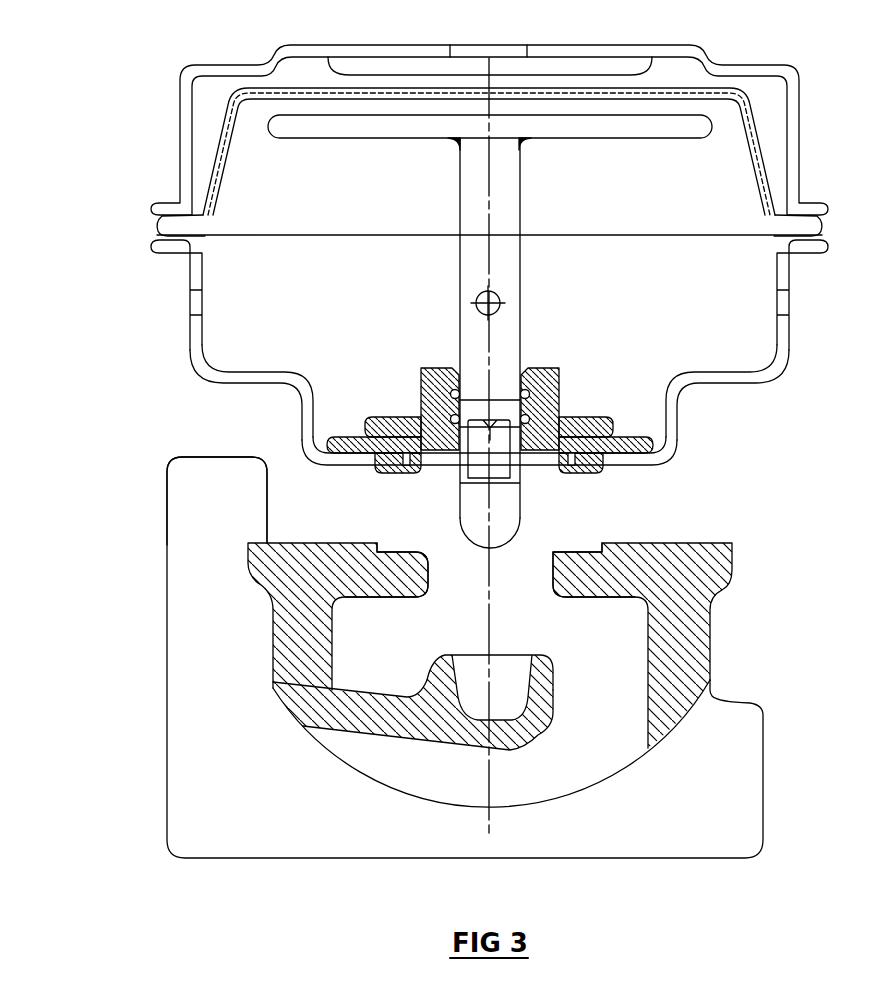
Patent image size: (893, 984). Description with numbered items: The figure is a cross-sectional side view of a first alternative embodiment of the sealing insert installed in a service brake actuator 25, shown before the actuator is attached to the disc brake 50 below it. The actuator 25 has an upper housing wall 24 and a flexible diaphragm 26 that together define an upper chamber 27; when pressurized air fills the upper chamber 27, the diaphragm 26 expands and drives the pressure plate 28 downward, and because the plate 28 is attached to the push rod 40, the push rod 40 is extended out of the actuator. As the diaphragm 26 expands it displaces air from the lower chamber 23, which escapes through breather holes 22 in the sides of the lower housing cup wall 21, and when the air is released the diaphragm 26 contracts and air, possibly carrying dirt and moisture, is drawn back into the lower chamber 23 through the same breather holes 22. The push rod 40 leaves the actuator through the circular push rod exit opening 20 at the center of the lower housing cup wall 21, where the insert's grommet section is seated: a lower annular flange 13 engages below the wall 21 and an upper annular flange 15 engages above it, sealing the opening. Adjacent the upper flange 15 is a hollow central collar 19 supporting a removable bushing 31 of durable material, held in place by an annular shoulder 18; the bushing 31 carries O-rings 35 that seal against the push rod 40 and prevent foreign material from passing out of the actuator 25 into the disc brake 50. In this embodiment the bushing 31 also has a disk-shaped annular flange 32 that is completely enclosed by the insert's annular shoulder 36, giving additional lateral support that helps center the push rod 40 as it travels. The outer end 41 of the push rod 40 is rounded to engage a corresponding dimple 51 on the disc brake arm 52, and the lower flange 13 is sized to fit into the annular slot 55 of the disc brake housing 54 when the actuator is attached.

The lower annular flange 13 is at (387, 468).
The upper annular flange 15 is at (635, 440).
The annular shoulder 18 is at (433, 372).
The hollow central collar 19 is at (555, 403).
The push rod exit opening 20 is at (537, 460).
The lower housing cup wall 21 is at (675, 443).
The breather holes 22 is at (196, 305).
The lower chamber 23 is at (250, 340).
The upper housing wall 24 is at (184, 93).
The service brake actuator 25 is at (115, 155).
The flexible diaphragm 26 is at (224, 160).
The upper chamber 27 is at (210, 88).
The pressure plate 28 is at (587, 138).
The removable bushing 31 is at (530, 393).
The disk-shaped annular flange 32 is at (397, 430).
The O-ring 35 is at (508, 393).
The annular shoulder 36 is at (370, 417).
The push rod 40 is at (505, 198).
The outer end 41 is at (505, 548).
The disc brake 50 is at (742, 633).
The dimple 51 is at (495, 710).
The disc brake arm 52 is at (457, 737).
The disc brake housing 54 is at (250, 522).
The annular slot 55 is at (395, 551).